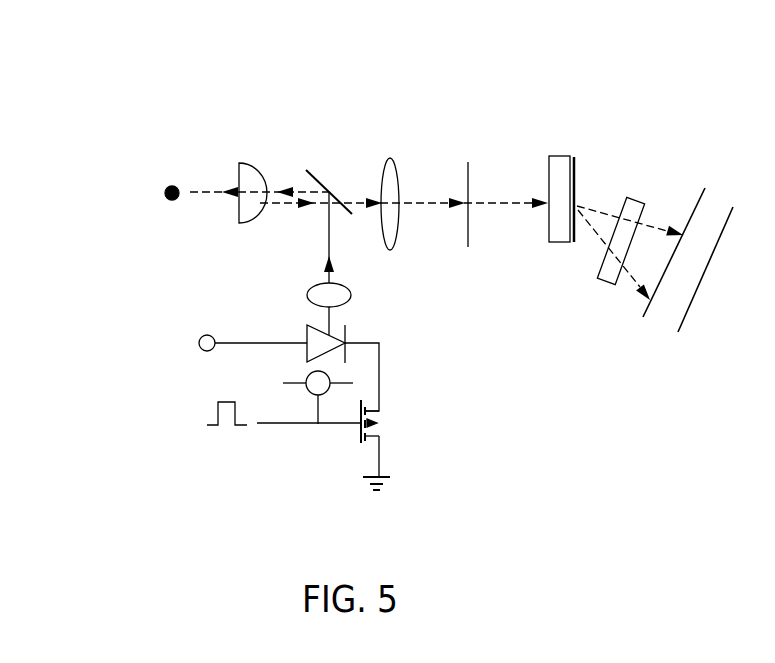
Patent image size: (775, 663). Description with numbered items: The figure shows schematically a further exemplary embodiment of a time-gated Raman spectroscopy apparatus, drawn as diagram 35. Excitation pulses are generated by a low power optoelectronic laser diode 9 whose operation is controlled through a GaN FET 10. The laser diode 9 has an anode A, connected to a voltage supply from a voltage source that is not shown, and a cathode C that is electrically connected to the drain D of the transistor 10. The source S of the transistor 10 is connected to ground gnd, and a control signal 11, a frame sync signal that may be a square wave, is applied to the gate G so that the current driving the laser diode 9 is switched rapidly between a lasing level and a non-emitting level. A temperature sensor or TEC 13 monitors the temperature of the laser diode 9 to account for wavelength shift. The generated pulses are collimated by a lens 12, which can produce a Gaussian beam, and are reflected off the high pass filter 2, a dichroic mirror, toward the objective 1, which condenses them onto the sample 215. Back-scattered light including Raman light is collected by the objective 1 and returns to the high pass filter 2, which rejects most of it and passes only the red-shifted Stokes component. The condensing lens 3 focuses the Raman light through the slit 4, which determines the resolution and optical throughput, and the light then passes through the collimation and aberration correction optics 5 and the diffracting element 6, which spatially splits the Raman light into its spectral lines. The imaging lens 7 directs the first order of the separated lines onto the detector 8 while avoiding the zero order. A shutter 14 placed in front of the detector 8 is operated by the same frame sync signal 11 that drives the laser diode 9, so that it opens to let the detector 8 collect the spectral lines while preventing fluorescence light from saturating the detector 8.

The diagram 35 is at (143, 64).
The objective 1 is at (239, 168).
The sample 215 is at (171, 201).
The high pass filter 2 is at (308, 170).
The condensing lens 3 is at (390, 158).
The slit 4 is at (468, 162).
The collimation and aberration correction optics 5 is at (560, 156).
The diffracting element 6 is at (576, 168).
The imaging lens 7 is at (637, 198).
The shutter 14 is at (708, 190).
The detector 8 is at (703, 277).
The lens 12 is at (346, 288).
The laser diode 9 is at (312, 322).
The anode A is at (247, 343).
The cathode C is at (365, 343).
The drain D is at (380, 377).
The GaN FET 10 is at (381, 438).
The source S is at (388, 463).
The control signal 11 is at (207, 425).
The gate G is at (274, 428).
The temperature sensor or TEC 13 is at (318, 424).
The ground gnd is at (371, 486).